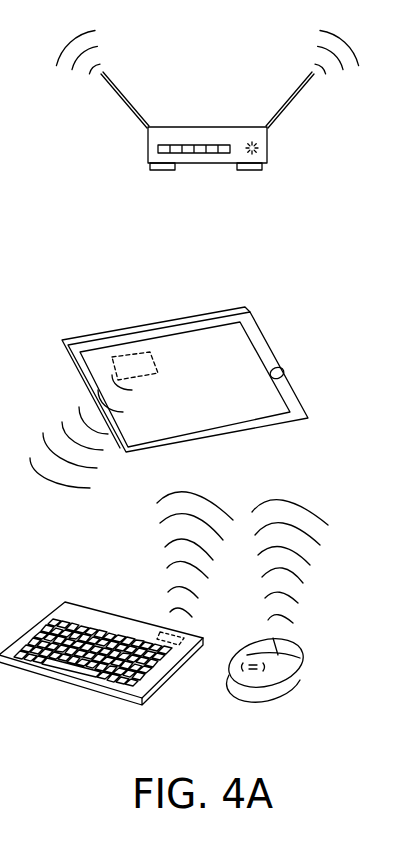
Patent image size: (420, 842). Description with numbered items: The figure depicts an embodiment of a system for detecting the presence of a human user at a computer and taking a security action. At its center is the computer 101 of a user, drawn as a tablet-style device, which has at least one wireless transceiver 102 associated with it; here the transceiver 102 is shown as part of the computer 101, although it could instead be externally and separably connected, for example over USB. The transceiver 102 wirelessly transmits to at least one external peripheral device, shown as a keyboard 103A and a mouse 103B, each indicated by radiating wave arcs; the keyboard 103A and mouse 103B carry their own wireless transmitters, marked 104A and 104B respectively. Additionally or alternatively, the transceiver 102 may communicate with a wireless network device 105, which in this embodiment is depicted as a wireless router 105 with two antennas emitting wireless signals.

The computer 101 is at (262, 323).
The wireless transceiver 102 is at (123, 357).
The keyboard 103A is at (48, 680).
The mouse 103B is at (303, 643).
The short-range wireless communication tag of keyboard 104A is at (167, 631).
The short-range wireless communication tag of mouse 104B is at (276, 661).
The wireless network device 105 is at (267, 157).